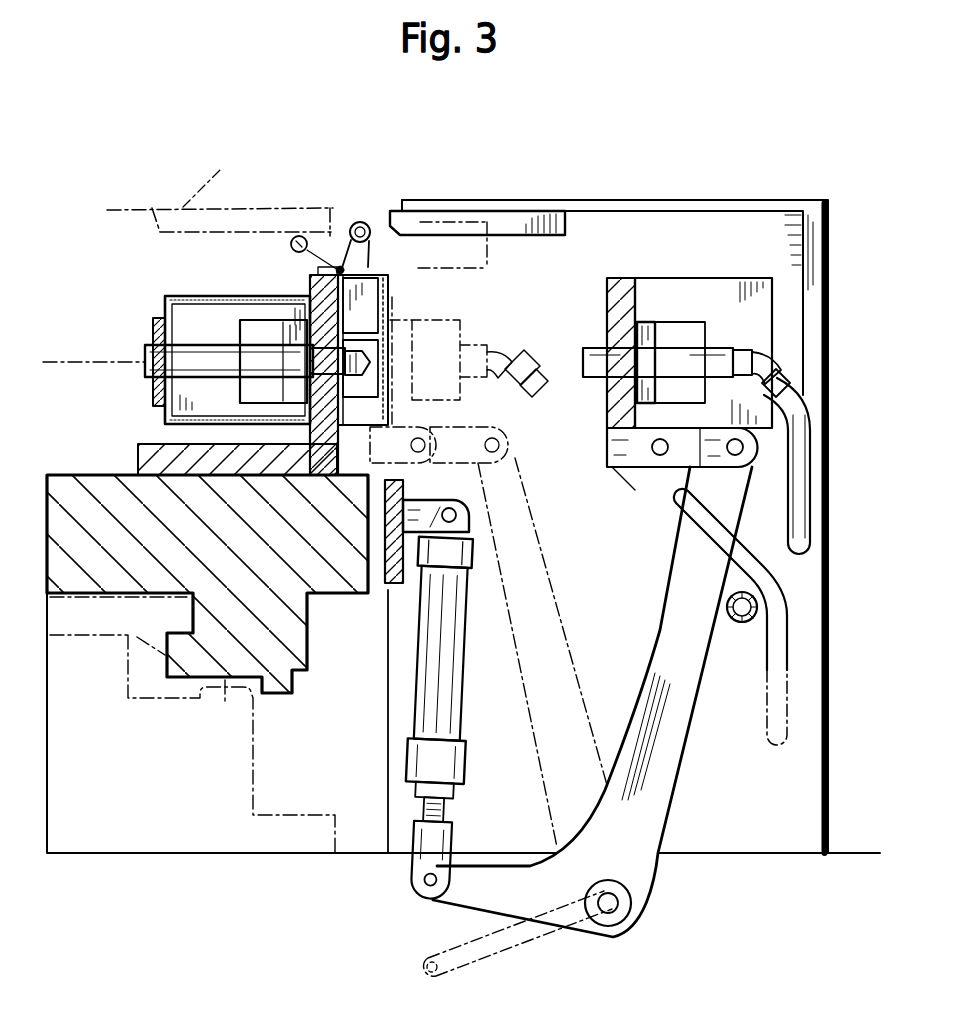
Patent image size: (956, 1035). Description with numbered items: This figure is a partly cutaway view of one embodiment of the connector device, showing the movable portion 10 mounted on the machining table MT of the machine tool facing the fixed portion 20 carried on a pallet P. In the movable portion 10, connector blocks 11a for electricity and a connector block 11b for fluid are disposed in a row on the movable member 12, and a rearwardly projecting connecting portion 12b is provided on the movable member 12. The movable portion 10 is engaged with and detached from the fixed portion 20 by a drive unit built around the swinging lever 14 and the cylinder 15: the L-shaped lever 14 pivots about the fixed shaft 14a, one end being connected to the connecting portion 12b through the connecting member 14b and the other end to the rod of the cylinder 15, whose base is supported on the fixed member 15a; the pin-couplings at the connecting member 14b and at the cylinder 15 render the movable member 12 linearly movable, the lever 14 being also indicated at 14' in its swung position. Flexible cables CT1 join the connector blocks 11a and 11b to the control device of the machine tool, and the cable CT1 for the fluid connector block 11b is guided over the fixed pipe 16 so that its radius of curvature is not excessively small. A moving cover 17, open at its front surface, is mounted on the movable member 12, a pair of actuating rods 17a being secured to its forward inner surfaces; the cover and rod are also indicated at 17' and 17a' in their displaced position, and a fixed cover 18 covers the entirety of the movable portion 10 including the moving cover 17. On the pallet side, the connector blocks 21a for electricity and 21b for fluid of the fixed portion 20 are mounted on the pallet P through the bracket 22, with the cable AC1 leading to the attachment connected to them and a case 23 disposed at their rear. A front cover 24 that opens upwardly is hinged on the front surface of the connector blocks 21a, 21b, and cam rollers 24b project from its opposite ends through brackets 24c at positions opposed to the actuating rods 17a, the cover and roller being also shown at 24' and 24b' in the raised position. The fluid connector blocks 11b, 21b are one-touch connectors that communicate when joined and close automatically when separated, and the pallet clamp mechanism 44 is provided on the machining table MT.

The movable portion 10 is at (720, 280).
The connector block for electricity 11a is at (698, 335).
The connector block for fluid 11b is at (652, 330).
The movable member 12 is at (622, 280).
The connecting portion 12b is at (616, 470).
The swinging lever 14 is at (592, 702).
The fixed shaft 14a is at (608, 905).
The connecting member 14b is at (704, 433).
The lever in displaced position 14' is at (488, 637).
The cylinder 15 is at (458, 702).
The fixed member 15a is at (408, 520).
The fixed pipe 16 is at (745, 624).
The moving cover 17 is at (602, 179).
The actuating rod 17a is at (490, 249).
The bracket in displaced position 17' is at (215, 172).
The stopper lip in displaced position 17a' is at (194, 216).
The fixed cover 18 is at (822, 346).
The fixed portion 20 is at (156, 302).
The connector block for electricity 21a is at (238, 334).
The connector block for fluid 21b is at (292, 300).
The bracket 22 is at (230, 458).
The case 23 is at (205, 298).
The front cover 24 is at (393, 350).
The cam roller 24b is at (386, 206).
The eye in displaced position 24b' is at (323, 207).
The bracket 24c is at (346, 267).
The plate in displaced position 24' is at (469, 323).
The pallet clamp mechanism 44 is at (254, 777).
The cable AC1 is at (120, 364).
The flexible cable CT1 is at (810, 470).
The machining table MT is at (221, 854).
The pallet P is at (308, 630).